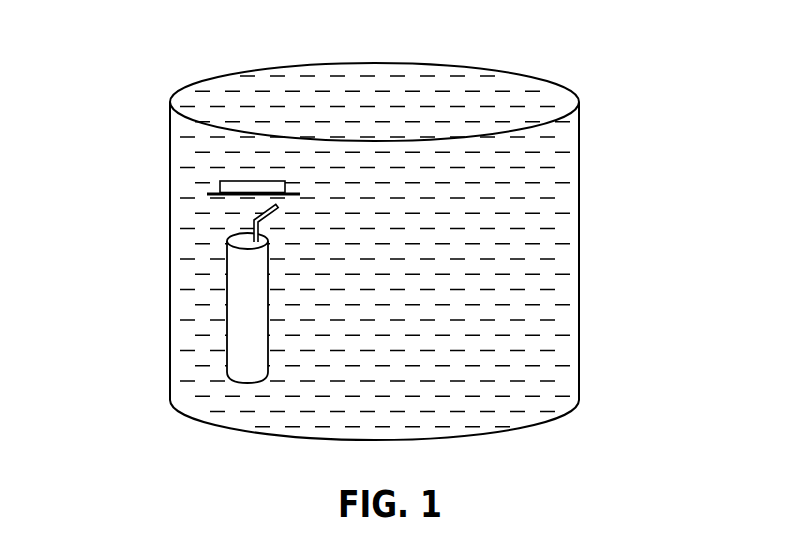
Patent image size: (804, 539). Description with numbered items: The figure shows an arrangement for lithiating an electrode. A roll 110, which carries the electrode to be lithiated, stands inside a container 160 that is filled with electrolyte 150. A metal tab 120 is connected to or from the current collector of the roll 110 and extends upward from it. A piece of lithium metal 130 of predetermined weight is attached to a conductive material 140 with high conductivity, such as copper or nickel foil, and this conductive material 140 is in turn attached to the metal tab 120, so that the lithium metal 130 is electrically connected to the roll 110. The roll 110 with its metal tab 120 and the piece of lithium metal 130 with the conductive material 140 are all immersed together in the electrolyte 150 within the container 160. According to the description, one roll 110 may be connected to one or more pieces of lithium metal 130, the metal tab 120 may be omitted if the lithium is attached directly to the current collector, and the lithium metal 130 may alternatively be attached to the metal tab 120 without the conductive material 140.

The roll 110 is at (230, 322).
The metal tab 120 is at (262, 210).
The piece of lithium metal 130 is at (240, 183).
The conductive material 140 is at (298, 192).
The electrolyte 150 is at (415, 297).
The container 160 is at (579, 158).